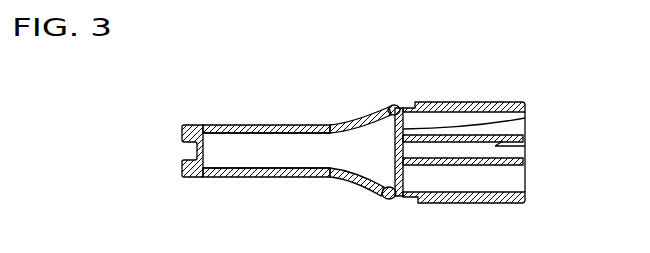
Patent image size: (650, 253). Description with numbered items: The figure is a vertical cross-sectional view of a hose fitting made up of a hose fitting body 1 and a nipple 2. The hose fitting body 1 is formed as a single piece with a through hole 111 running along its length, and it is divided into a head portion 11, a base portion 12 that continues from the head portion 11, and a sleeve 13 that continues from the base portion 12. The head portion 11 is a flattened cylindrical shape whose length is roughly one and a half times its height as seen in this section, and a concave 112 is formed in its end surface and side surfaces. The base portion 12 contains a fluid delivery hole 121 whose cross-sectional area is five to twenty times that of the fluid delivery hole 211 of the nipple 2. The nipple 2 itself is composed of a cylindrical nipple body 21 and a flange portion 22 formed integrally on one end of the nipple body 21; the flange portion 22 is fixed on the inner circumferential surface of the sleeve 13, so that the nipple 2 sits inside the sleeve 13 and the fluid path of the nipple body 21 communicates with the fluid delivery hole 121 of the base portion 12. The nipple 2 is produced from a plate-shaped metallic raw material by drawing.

The hose fitting body 1 is at (360, 110).
The head portion 11 is at (242, 183).
The through hole 111 is at (237, 140).
The concave 112 is at (196, 150).
The base portion 12 is at (327, 183).
The fluid delivery hole 121 is at (342, 163).
The sleeve 13 is at (482, 100).
The nipple 2 is at (527, 130).
The nipple body 21 is at (527, 152).
The fluid delivery hole 211 is at (440, 153).
The flange portion 22 is at (527, 120).